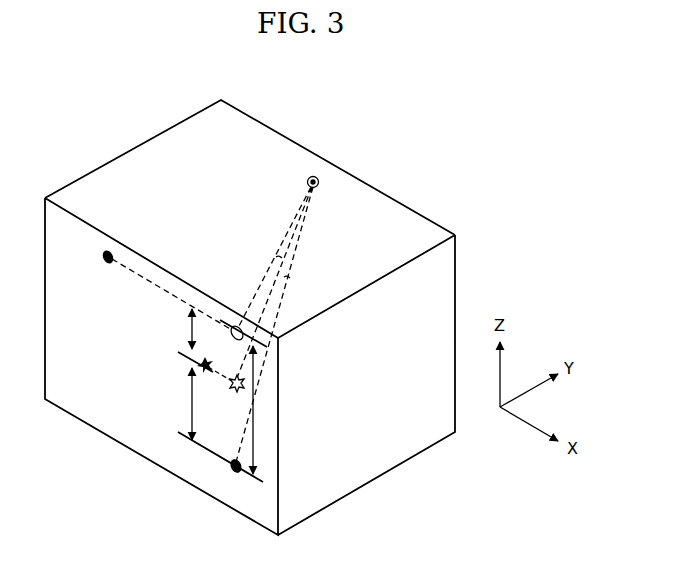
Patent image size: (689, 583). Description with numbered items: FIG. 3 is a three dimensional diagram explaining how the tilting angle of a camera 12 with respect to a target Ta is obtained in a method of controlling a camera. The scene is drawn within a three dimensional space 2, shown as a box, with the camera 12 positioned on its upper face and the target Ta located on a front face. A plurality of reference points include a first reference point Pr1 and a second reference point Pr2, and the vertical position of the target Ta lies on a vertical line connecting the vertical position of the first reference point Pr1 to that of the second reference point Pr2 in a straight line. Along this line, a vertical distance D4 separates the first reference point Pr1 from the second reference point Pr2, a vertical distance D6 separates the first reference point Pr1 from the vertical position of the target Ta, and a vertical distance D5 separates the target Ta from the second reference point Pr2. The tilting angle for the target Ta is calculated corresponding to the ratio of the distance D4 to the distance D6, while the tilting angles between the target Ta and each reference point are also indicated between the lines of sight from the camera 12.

The three dimensional space 2 is at (396, 201).
The camera 12 is at (320, 178).
The first reference point Pr1 is at (103, 262).
The second reference point Pr2 is at (229, 465).
The target Ta is at (204, 372).
The vertical distance between the first reference point and the second reference poi D4 is at (265, 410).
The vertical distance between the target and the second reference point D5 is at (175, 404).
The vertical distance between the first reference point and the target D6 is at (181, 329).